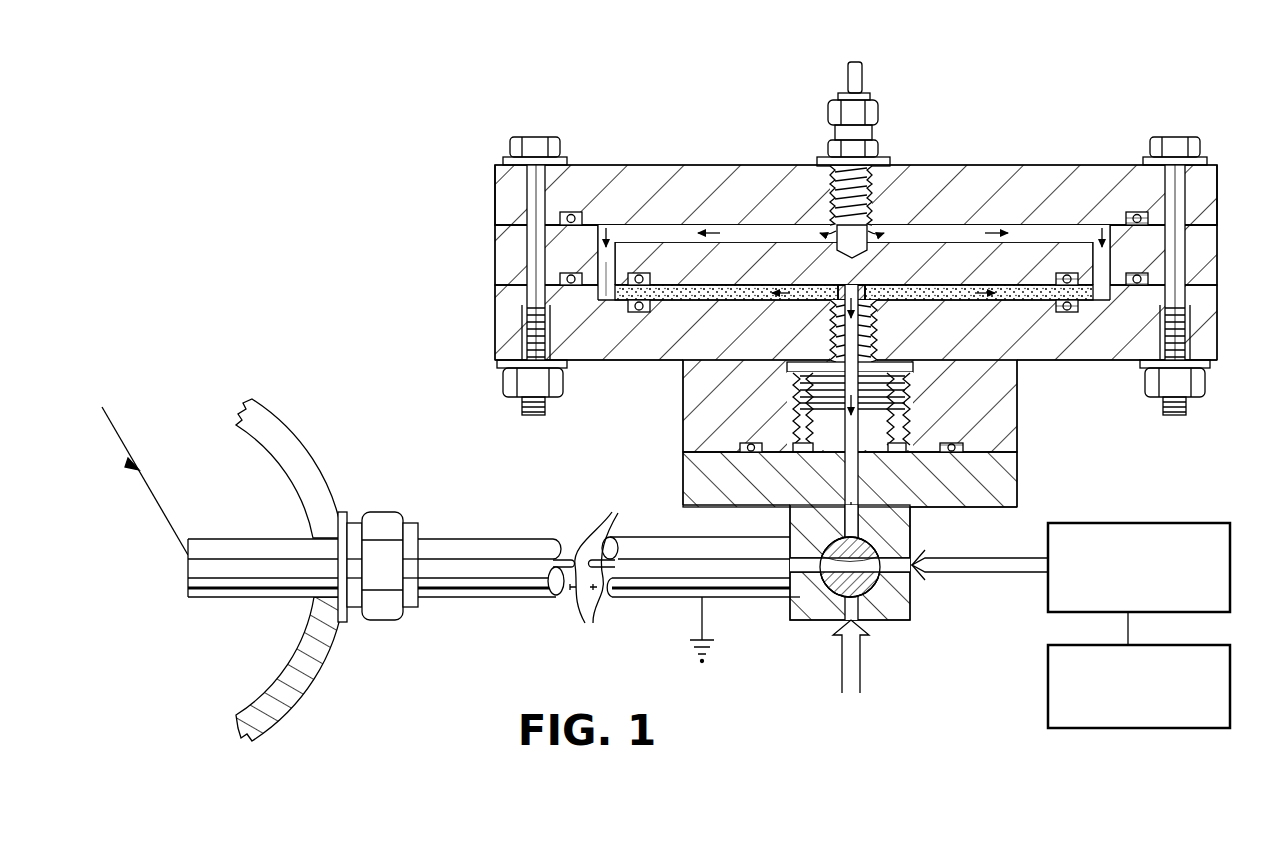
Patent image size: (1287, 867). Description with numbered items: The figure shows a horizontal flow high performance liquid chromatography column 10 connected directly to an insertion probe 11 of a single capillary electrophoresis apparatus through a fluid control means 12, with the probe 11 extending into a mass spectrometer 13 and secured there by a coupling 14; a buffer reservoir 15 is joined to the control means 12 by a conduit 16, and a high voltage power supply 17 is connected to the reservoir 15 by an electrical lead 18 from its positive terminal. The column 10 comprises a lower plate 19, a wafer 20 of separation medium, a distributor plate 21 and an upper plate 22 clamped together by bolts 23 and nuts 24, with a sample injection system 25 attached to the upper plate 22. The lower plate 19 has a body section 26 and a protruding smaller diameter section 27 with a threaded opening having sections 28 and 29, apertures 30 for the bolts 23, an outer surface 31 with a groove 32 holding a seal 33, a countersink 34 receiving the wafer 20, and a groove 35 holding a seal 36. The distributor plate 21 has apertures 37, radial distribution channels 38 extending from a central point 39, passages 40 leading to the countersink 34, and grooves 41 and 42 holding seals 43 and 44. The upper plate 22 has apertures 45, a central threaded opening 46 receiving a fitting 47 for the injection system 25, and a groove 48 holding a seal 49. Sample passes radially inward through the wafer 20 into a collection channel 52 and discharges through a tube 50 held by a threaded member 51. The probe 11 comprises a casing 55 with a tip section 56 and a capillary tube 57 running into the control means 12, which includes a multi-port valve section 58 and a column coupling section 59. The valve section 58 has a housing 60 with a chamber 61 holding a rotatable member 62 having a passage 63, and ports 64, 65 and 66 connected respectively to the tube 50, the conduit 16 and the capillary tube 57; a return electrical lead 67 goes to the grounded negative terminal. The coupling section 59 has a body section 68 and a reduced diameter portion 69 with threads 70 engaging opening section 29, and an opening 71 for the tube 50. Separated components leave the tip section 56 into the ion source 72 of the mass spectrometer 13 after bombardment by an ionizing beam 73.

The horizontal flow chromatography column 10 is at (694, 141).
The insertion probe 11 is at (528, 649).
The fluid control means 12 is at (933, 678).
The mass spectrometer 13 is at (305, 446).
The coupling 14 is at (393, 512).
The buffer reservoir 15 is at (1205, 522).
The conduit 16 is at (1021, 574).
The high voltage power supply 17 is at (1048, 680).
The electrical lead 18 is at (1126, 620).
The lower plate 19 is at (1229, 354).
The wafer of separation medium 20 is at (1000, 303).
The distributor plate 21 is at (1228, 258).
The upper plate 22 is at (1228, 201).
The bolts 23 is at (538, 137).
The nuts 24 is at (503, 385).
The sample injection system 25 is at (860, 45).
The body section 26 is at (506, 340).
The protruding smaller diameter section 27 is at (690, 403).
The opening section 28 is at (829, 330).
The opening section 29 is at (796, 373).
The apertures 30 is at (526, 300).
The outer surface 31 is at (706, 453).
The groove 32 is at (966, 450).
The seal 33 is at (956, 445).
The countersink 34 is at (607, 292).
The groove 35 is at (648, 312).
The seal 36 is at (637, 308).
The apertures 37 is at (526, 238).
The distribution channels 38 is at (758, 228).
The central point 39 is at (866, 248).
The passages 40 is at (598, 259).
The groove 41 is at (1058, 272).
The groove 42 is at (1148, 283).
The seal 43 is at (1066, 295).
The seal 44 is at (1148, 262).
The apertures 45 is at (526, 187).
The threaded opening 46 is at (872, 205).
The fitting 47 is at (878, 142).
The groove 48 is at (1137, 212).
The seal 49 is at (1118, 217).
The discharge tube 50 is at (905, 379).
The threaded member 51 is at (878, 318).
The collection channel 52 is at (848, 290).
The casing 55 is at (500, 538).
The tip section 56 is at (256, 538).
The capillary tube 57 is at (596, 555).
The multi-port valve section 58 is at (936, 536).
The column coupling section 59 is at (1035, 482).
The housing 60 is at (877, 574).
The chamber 61 is at (869, 592).
The rotatable member 62 is at (827, 597).
The passage 63 is at (861, 592).
The port 64 is at (838, 530).
The port 65 is at (906, 573).
The port 66 is at (790, 603).
The return electrical lead 67 is at (576, 609).
The body section 68 is at (690, 470).
The protruding reduced diameter portion 69 is at (800, 411).
The threads 70 is at (910, 426).
The opening 71 is at (862, 458).
The ion source 72 is at (228, 651).
The ionizing beam 73 is at (157, 499).